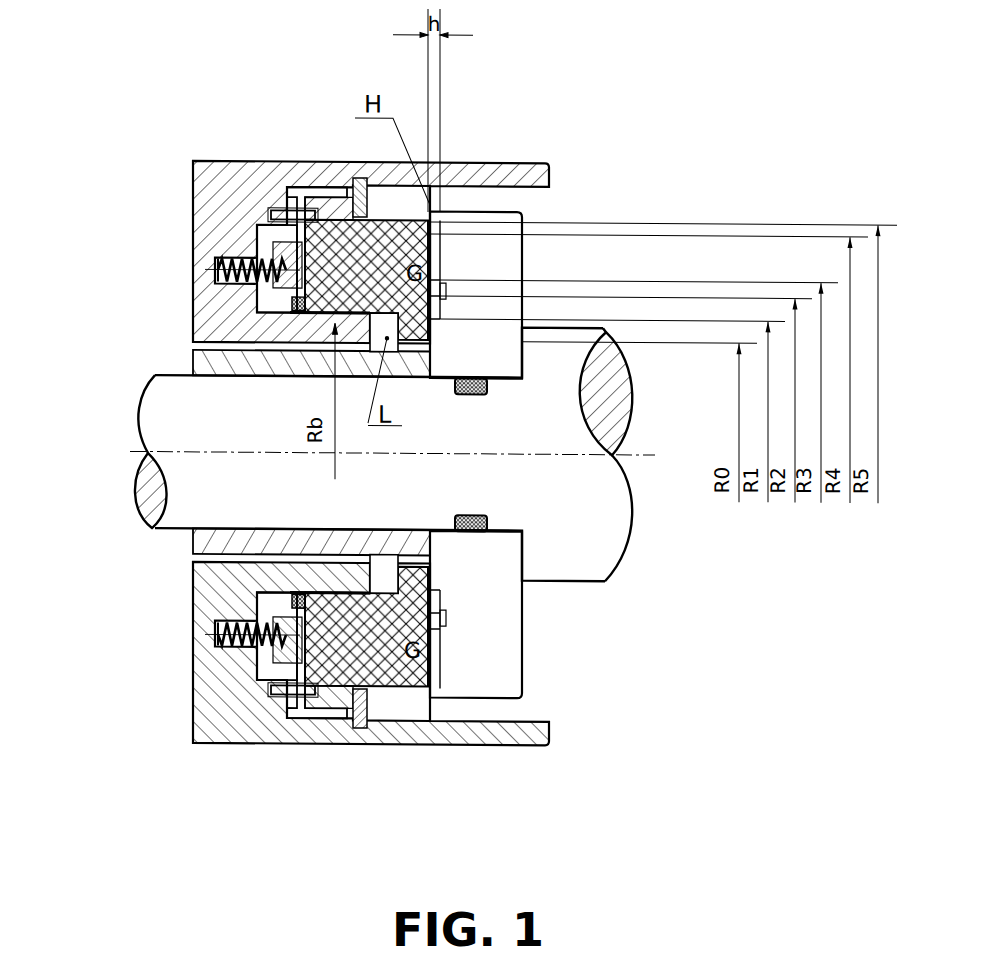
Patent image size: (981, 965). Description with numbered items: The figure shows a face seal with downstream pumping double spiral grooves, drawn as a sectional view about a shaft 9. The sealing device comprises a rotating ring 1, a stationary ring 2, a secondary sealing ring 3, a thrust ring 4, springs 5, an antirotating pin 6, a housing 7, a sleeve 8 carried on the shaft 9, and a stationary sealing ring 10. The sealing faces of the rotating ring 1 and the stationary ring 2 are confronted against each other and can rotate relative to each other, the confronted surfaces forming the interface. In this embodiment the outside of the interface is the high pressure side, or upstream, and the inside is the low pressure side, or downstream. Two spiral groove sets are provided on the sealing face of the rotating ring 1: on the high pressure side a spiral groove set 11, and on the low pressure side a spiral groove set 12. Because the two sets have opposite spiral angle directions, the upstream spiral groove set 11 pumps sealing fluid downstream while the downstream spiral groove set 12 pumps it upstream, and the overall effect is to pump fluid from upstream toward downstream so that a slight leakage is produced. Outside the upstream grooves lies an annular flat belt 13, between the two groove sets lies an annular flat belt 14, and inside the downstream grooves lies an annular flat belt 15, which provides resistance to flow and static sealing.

The rotating ring 1 is at (478, 655).
The stationary ring 2 is at (333, 701).
The secondary sealing ring 3 is at (192, 736).
The thrust ring 4 is at (283, 643).
The springs 5 is at (287, 605).
The antirotating pin 6 is at (262, 243).
The housing 7 is at (217, 226).
The sleeve 8 is at (296, 365).
The shaft 9 is at (358, 398).
The stationary sealing ring 10 is at (422, 210).
The spiral groove set 11 is at (442, 269).
The spiral groove set 12 is at (446, 294).
The annular flat belt 13 is at (466, 374).
The annular flat belt 14 is at (442, 297).
The annular flat belt 15 is at (442, 315).